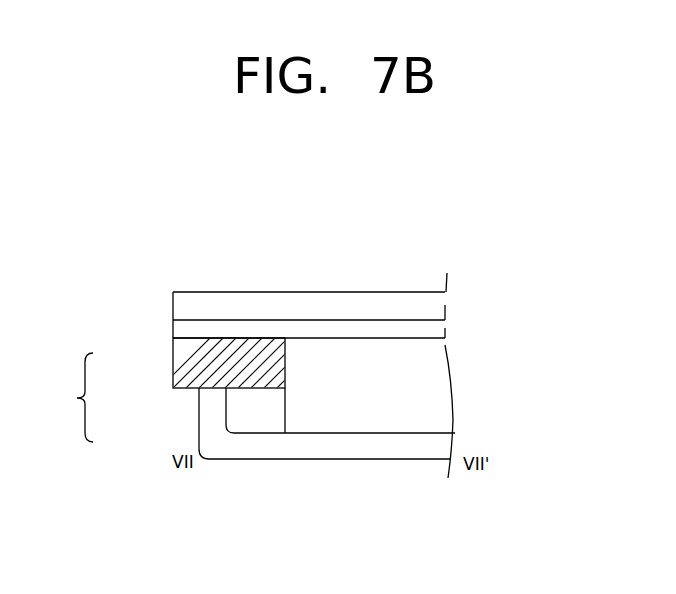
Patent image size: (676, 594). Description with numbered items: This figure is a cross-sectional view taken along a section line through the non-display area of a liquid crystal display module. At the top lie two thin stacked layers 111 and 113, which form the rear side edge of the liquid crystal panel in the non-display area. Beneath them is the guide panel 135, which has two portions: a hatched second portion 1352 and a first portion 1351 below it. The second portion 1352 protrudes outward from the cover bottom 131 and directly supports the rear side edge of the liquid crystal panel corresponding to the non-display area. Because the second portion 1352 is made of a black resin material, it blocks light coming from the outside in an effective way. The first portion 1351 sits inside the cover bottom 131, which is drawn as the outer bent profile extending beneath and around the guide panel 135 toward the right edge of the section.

The substrate 111 is at (186, 303).
The buffer layer 113 is at (186, 329).
The guide panel 135 is at (69, 397).
The second portion of the guide panel 1352 is at (185, 366).
The first portion of the guide panel 1351 is at (255, 413).
The cover bottom 131 is at (250, 445).